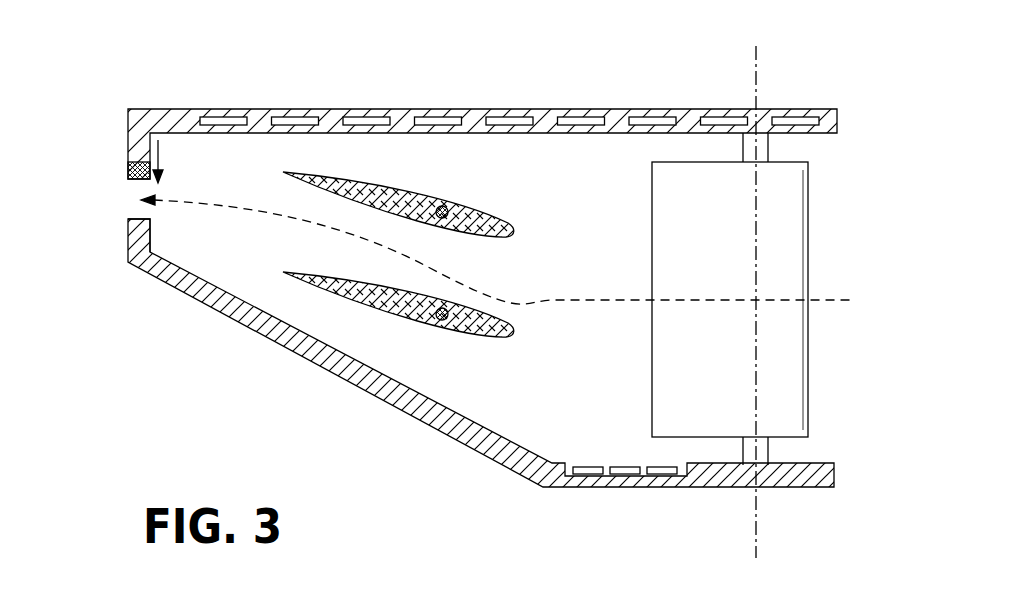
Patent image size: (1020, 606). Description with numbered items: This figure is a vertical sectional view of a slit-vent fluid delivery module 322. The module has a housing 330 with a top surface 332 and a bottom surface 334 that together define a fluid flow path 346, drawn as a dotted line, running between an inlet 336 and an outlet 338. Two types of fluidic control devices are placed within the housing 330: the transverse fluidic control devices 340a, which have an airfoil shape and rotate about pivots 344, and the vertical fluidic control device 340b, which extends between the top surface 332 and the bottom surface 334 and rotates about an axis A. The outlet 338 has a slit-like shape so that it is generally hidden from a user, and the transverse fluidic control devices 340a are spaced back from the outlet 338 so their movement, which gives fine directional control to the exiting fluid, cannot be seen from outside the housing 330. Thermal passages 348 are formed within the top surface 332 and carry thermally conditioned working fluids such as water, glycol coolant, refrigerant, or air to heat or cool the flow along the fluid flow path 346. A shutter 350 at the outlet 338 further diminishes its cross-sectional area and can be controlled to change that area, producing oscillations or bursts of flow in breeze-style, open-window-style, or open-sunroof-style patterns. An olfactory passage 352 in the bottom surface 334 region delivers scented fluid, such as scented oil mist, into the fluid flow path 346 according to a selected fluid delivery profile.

The slit-vent fluid delivery module 322 is at (637, 88).
The housing 330 is at (816, 103).
The top surface 332 is at (480, 108).
The bottom surface 334 is at (436, 432).
The inlet 336 is at (860, 151).
The outlet 338 is at (136, 218).
The transverse fluidic control devices 340a is at (365, 185).
The vertical fluidic control device 340b is at (810, 247).
The pivots 344 is at (445, 206).
The fluid flow path 346 is at (557, 297).
The thermal passages 348 is at (362, 110).
The shutter 350 is at (128, 172).
The olfactory passage 352 is at (605, 470).
The axis A is at (756, 535).